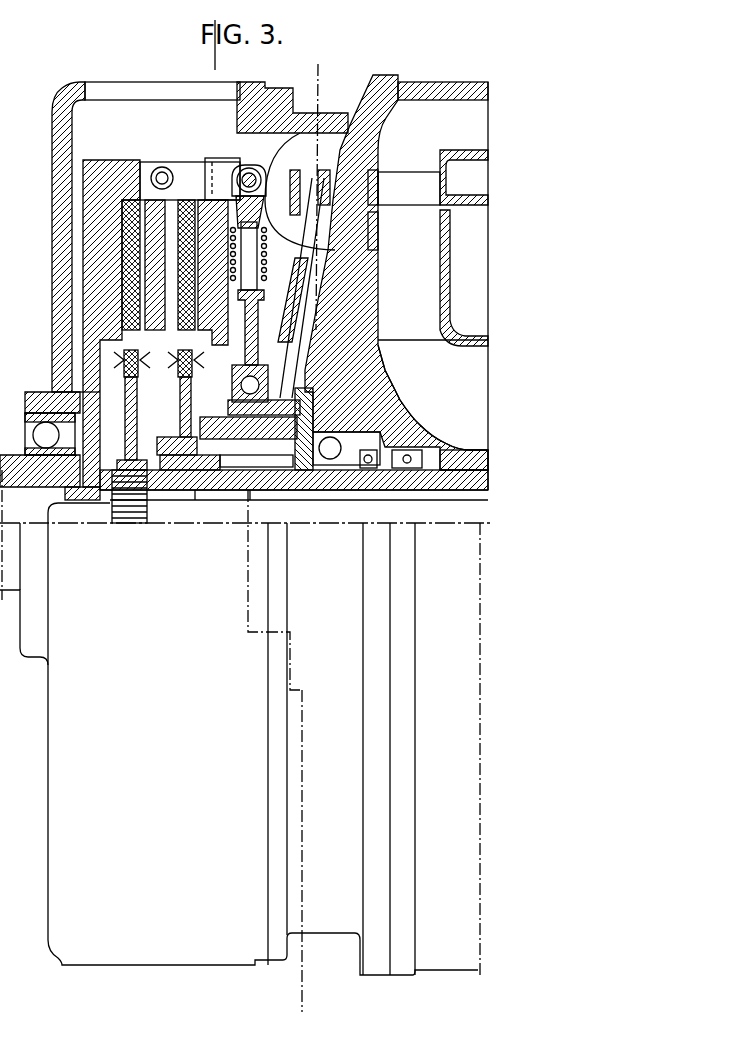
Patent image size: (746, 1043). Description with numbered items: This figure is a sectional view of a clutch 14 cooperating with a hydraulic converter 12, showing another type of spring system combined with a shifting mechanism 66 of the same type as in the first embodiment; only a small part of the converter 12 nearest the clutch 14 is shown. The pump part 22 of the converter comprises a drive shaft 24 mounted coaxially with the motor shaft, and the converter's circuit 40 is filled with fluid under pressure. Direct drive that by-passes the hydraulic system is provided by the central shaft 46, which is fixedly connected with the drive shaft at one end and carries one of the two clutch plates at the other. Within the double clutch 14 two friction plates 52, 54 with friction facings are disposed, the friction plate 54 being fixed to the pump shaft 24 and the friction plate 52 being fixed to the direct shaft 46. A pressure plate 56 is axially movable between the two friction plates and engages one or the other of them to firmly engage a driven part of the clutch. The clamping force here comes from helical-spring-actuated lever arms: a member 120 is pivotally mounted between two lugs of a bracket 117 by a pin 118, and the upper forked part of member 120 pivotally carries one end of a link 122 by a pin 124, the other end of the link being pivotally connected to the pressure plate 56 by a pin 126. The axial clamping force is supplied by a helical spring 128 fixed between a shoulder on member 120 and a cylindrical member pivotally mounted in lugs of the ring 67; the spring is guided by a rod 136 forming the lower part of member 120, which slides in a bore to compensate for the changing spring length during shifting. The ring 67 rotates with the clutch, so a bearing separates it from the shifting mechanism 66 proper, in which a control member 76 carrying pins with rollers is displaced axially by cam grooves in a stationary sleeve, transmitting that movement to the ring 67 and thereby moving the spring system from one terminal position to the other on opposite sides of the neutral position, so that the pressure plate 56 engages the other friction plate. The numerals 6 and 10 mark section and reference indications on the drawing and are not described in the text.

The section line 6 is at (356, 72).
The shaft 10 is at (196, 490).
The hydraulic converter 12 is at (429, 149).
The clutch 14 is at (106, 139).
The pump part 22 is at (416, 291).
The drive shaft 24 is at (294, 461).
The circuit 40 is at (449, 401).
The central shaft 46 is at (461, 515).
The friction plate 52 is at (137, 410).
The friction plate 54 is at (190, 398).
The pressure plate 56 is at (162, 330).
The shifting mechanism 66 is at (238, 331).
The ring 67 is at (245, 306).
The control member 76 is at (236, 412).
The bracket 117 is at (245, 166).
The pin 118 is at (262, 196).
The member 120 is at (263, 216).
The link 122 is at (205, 178).
The pin 124 is at (258, 192).
The pin 126 is at (162, 168).
The helical spring 128 is at (262, 272).
The rod 136 is at (263, 256).